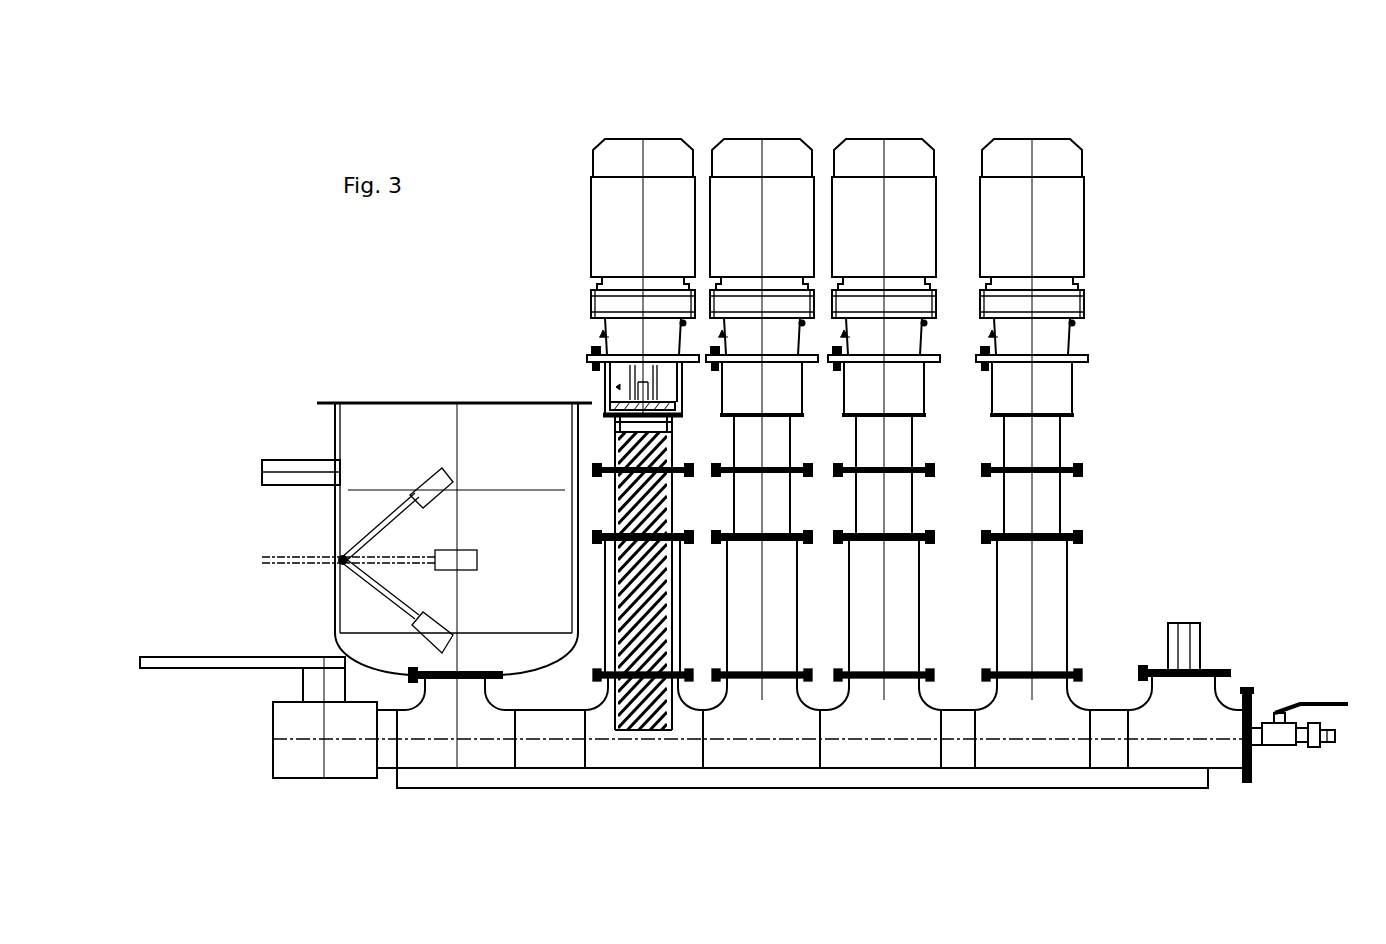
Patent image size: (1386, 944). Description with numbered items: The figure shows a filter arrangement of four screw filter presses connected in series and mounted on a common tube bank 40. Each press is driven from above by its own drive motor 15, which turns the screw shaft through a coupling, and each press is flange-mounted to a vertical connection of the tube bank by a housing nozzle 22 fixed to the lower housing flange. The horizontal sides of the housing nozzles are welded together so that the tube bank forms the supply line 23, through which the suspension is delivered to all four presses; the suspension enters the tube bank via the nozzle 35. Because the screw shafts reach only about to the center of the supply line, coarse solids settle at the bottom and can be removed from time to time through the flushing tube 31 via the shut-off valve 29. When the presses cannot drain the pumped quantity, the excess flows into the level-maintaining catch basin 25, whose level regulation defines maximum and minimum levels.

The drive motor 15 is at (1067, 140).
The housing nozzle 22 is at (915, 685).
The supply line 23 is at (687, 723).
The level-maintaining catch basin 25 is at (333, 400).
The shut-off valve 29 is at (275, 742).
The flushing tube 31 is at (1283, 712).
The nozzle 35 is at (1197, 623).
The tube bank 40 is at (870, 758).